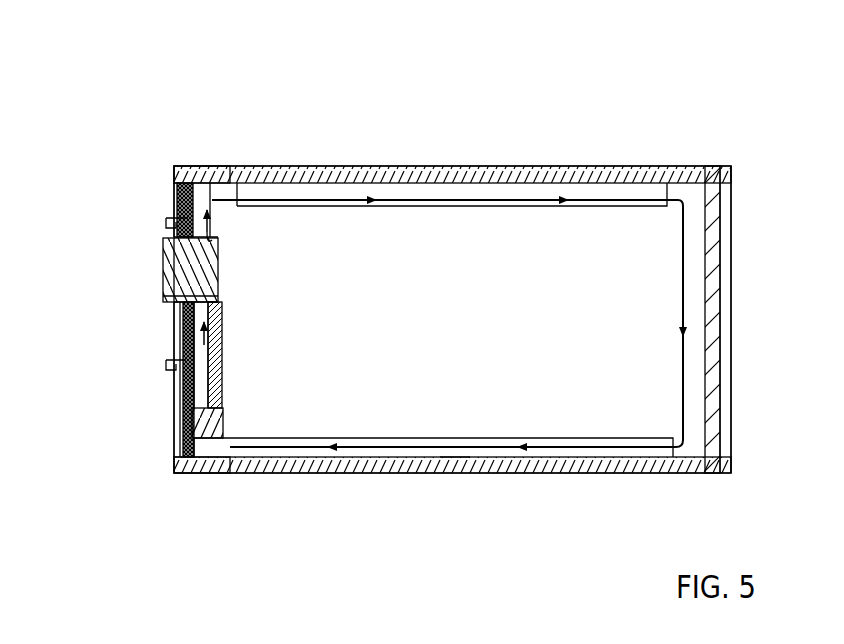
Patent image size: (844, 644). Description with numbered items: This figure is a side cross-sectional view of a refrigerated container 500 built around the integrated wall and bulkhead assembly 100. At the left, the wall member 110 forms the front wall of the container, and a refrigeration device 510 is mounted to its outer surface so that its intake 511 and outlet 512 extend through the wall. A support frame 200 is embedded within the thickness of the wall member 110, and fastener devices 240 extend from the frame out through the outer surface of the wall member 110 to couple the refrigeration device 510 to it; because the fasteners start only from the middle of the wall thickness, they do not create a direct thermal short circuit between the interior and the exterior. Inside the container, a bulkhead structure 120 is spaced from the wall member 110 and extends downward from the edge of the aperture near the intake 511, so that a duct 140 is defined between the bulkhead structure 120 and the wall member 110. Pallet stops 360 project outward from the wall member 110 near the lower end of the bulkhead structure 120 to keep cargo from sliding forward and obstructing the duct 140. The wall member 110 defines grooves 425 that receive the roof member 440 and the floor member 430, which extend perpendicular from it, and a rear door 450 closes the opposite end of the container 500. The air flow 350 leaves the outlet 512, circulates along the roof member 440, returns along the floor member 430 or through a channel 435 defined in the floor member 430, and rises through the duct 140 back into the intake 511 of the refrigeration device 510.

The integrated wall and bulkhead assembly 100 is at (183, 442).
The wall member 110 is at (176, 186).
The bulkhead structure 120 is at (224, 332).
The duct 140 is at (216, 358).
The support frame 200 is at (176, 198).
The fastener devices 240 is at (168, 222).
The air flow 350 is at (336, 197).
The pallet stops 360 is at (226, 424).
The grooves 425 is at (224, 176).
The floor member 430 is at (392, 474).
The channel 435 is at (455, 474).
The roof member 440 is at (505, 168).
The rear door 450 is at (733, 331).
The cooling system 500 is at (462, 100).
The refrigeration device 510 is at (165, 268).
The intake 511 is at (198, 306).
The outlet 512 is at (218, 228).